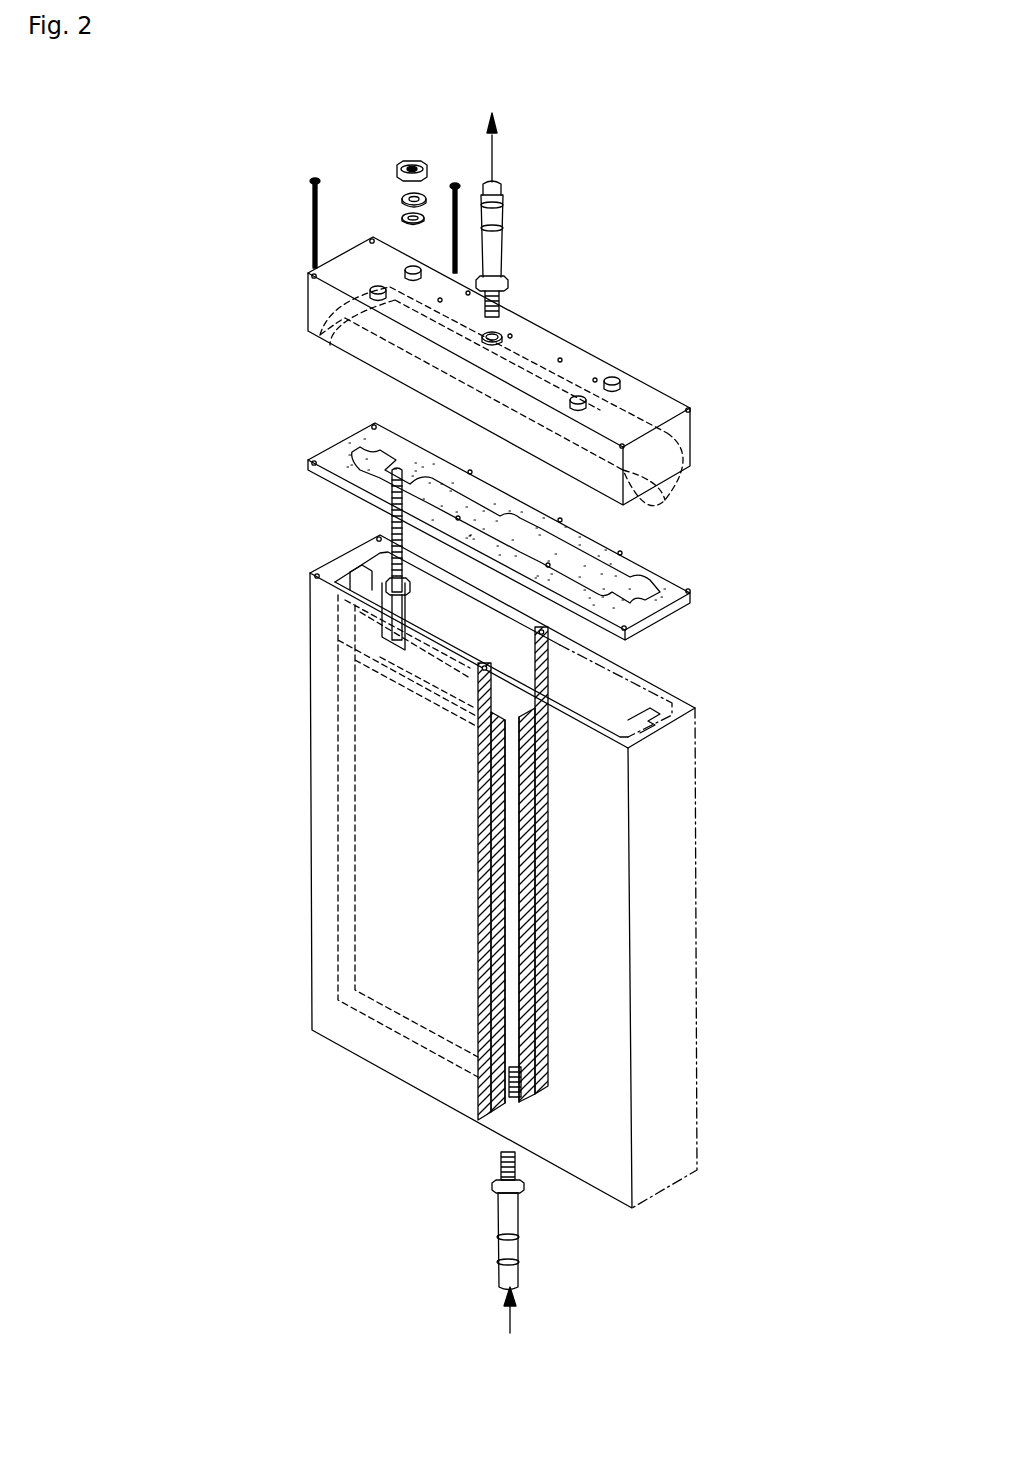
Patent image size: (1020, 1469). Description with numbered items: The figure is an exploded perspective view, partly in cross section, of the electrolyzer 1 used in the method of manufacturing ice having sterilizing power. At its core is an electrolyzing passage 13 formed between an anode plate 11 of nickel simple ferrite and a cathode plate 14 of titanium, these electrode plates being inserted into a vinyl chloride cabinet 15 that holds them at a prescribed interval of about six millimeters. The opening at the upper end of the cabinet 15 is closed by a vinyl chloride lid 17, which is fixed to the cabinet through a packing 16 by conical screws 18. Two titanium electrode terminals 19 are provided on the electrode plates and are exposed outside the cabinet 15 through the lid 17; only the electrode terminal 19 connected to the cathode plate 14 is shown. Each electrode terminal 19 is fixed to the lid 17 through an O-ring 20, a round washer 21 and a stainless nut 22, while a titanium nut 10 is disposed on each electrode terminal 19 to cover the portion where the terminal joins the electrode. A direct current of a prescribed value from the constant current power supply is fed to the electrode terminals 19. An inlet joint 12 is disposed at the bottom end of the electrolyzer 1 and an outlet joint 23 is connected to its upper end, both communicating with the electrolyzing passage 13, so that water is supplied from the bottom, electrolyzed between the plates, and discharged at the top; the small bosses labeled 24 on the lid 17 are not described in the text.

The electrolyzer 1 is at (190, 522).
The titanium nut 10 is at (360, 597).
The anode plate 11 is at (505, 893).
The inlet joint 12 is at (522, 1218).
The electrolyzing passage 13 is at (513, 1027).
The cathode plate 14 is at (527, 838).
The cabinet 15 is at (398, 850).
The packing 16 is at (690, 578).
The lid 17 is at (690, 440).
The conical screws 18 is at (313, 222).
The electrode terminals 19 is at (392, 522).
The O-ring 20 is at (427, 194).
The round washer 21 is at (405, 218).
The stainless nut 22 is at (395, 162).
The outlet joint 23 is at (500, 253).
The boss 24 is at (413, 266).